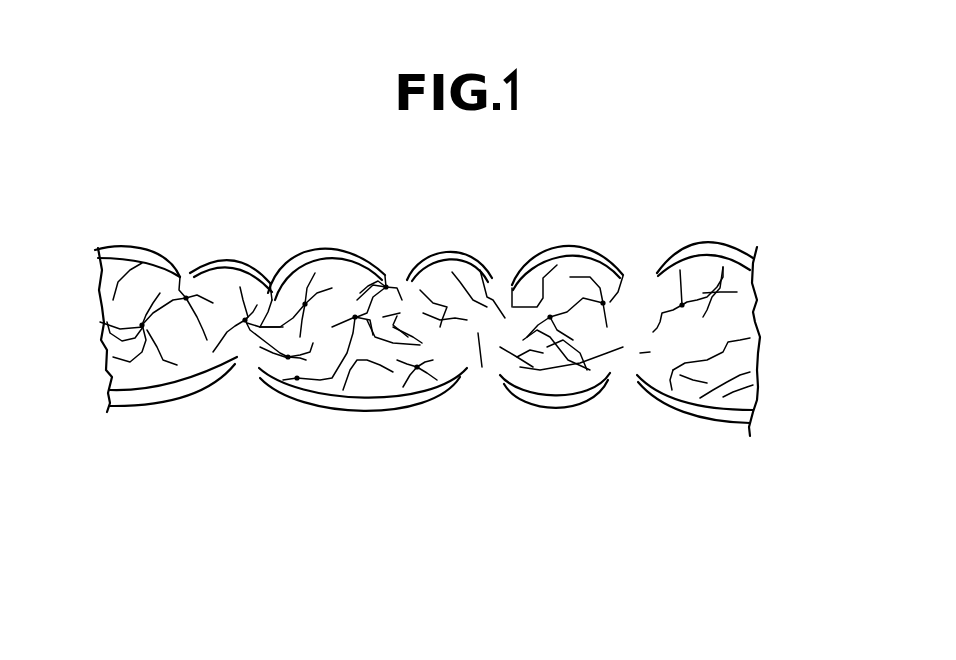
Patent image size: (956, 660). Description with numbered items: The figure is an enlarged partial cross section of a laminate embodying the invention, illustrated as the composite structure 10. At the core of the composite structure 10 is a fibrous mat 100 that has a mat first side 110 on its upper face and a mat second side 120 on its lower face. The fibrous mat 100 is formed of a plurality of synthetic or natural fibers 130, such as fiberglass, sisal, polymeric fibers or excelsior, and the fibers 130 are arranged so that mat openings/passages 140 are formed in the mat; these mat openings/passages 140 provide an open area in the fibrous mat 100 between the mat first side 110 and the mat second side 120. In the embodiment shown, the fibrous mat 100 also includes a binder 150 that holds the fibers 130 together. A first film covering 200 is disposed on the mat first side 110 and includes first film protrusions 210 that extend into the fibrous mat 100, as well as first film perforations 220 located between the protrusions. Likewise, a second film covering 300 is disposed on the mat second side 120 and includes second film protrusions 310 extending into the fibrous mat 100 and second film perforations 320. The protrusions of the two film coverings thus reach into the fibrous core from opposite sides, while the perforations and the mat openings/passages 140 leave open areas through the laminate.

The composite structure 10 is at (801, 178).
The fibrous mat 100 is at (421, 330).
The mat first side 110 is at (705, 234).
The mat second side 120 is at (695, 426).
The fibers 130 is at (86, 319).
The mat openings/passages 140 is at (429, 330).
The binder 150 is at (364, 332).
The first film covering 200 is at (106, 224).
The first film protrusions 210 is at (359, 245).
The first film perforations 220 is at (422, 238).
The second film covering 300 is at (115, 436).
The second film protrusions 310 is at (360, 418).
The second film perforations 320 is at (451, 448).